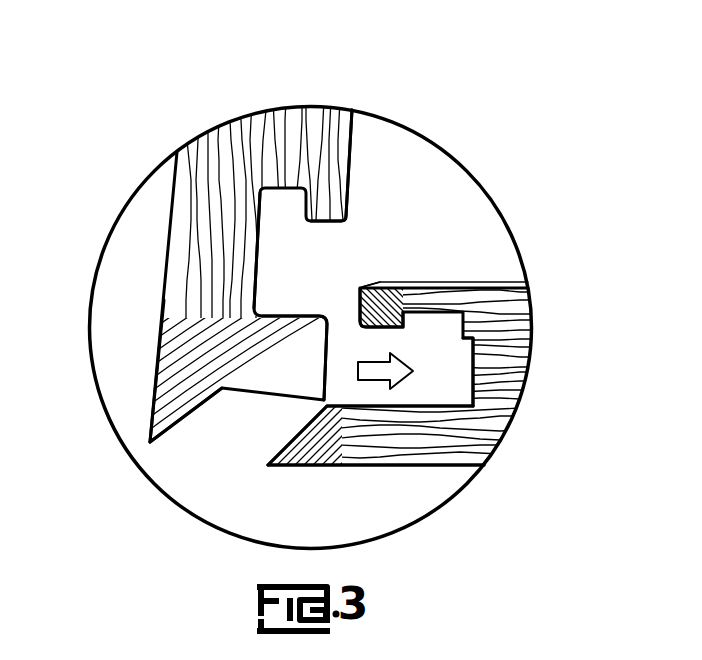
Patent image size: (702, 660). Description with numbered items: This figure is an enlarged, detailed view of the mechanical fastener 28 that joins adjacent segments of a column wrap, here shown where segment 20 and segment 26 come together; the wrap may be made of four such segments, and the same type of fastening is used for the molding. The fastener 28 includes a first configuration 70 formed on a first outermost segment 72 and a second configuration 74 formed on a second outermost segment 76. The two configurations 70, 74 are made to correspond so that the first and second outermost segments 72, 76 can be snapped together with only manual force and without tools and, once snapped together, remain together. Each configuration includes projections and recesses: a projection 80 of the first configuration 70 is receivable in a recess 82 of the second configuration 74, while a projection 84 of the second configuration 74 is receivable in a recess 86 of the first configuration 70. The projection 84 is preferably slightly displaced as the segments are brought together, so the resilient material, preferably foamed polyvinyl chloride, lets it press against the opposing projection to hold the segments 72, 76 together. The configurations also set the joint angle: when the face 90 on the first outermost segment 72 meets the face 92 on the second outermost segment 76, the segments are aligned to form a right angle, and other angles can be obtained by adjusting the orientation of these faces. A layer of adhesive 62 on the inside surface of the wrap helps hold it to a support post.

The segment 20 is at (212, 228).
The segment 26 is at (475, 433).
The mechanical fastener 28 is at (86, 309).
The adhesive layer 62 is at (351, 138).
The first configuration 70 is at (256, 262).
The first outermost segment 72 is at (192, 365).
The second configuration 74 is at (447, 404).
The second outermost segment 76 is at (378, 442).
The projection 80 is at (292, 342).
The recess 82 is at (440, 357).
The projection 84 is at (378, 303).
The recess 86 is at (282, 267).
The face 90 is at (207, 416).
The face 92 is at (268, 463).